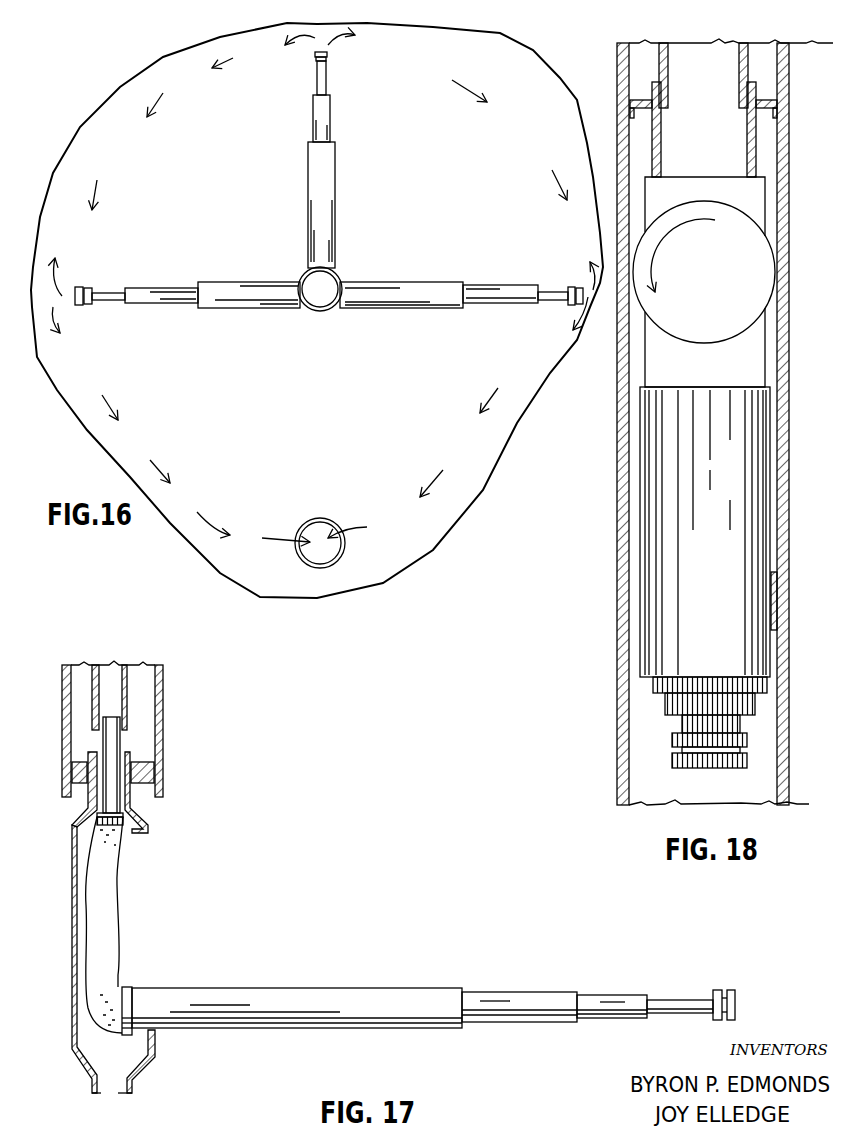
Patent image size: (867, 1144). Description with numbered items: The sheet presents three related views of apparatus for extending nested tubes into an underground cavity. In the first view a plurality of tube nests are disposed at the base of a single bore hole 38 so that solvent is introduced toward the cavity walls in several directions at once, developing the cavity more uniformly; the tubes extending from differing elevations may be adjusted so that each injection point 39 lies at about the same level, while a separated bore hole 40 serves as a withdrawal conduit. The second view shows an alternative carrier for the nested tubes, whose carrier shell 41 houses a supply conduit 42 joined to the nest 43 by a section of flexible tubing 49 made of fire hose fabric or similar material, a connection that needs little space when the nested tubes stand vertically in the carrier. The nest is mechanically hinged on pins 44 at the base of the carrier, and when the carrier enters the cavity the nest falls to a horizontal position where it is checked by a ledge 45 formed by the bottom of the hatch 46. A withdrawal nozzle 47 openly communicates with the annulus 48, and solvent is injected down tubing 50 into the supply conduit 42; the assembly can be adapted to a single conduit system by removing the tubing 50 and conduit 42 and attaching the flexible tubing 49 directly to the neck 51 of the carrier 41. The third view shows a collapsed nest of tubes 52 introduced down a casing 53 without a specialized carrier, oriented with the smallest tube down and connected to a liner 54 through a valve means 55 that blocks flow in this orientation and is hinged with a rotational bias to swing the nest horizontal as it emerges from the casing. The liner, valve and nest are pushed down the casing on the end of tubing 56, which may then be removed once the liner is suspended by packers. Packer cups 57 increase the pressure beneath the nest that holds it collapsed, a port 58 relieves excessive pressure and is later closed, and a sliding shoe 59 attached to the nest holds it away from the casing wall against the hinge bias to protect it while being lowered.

In FIG. 16, the bore hole 38 is at (338, 280).
In FIG. 16, the injection point 39 is at (328, 57).
In FIG. 16, the separated bore hole 40 is at (327, 520).
In FIG. 17, the carrier shell 41 is at (70, 925).
In FIG. 17, the supply conduit 42 is at (115, 740).
In FIG. 17, the nest 43 is at (417, 985).
In FIG. 17, the pins 44 is at (128, 1005).
In FIG. 17, the ledge 45 is at (152, 1035).
In FIG. 17, the hatch 46 is at (142, 905).
In FIG. 17, the withdrawal nozzle 47 is at (137, 1080).
In FIG. 17, the annulus 48 is at (82, 707).
In FIG. 17, the flexible tubing 49 is at (120, 875).
In FIG. 17, the tubing 50 is at (93, 678).
In FIG. 17, the neck 51 is at (90, 795).
In FIG. 18, the collapsed nest of tubes 52 is at (722, 545).
In FIG. 18, the casing 53 is at (789, 372).
In FIG. 18, the liner 54 is at (659, 158).
In FIG. 18, the valve means 55 is at (715, 287).
In FIG. 18, the tubing 56 is at (748, 62).
In FIG. 18, the packer cups 57 is at (766, 104).
In FIG. 18, the port 58 is at (747, 140).
In FIG. 18, the sliding shoe 59 is at (775, 597).